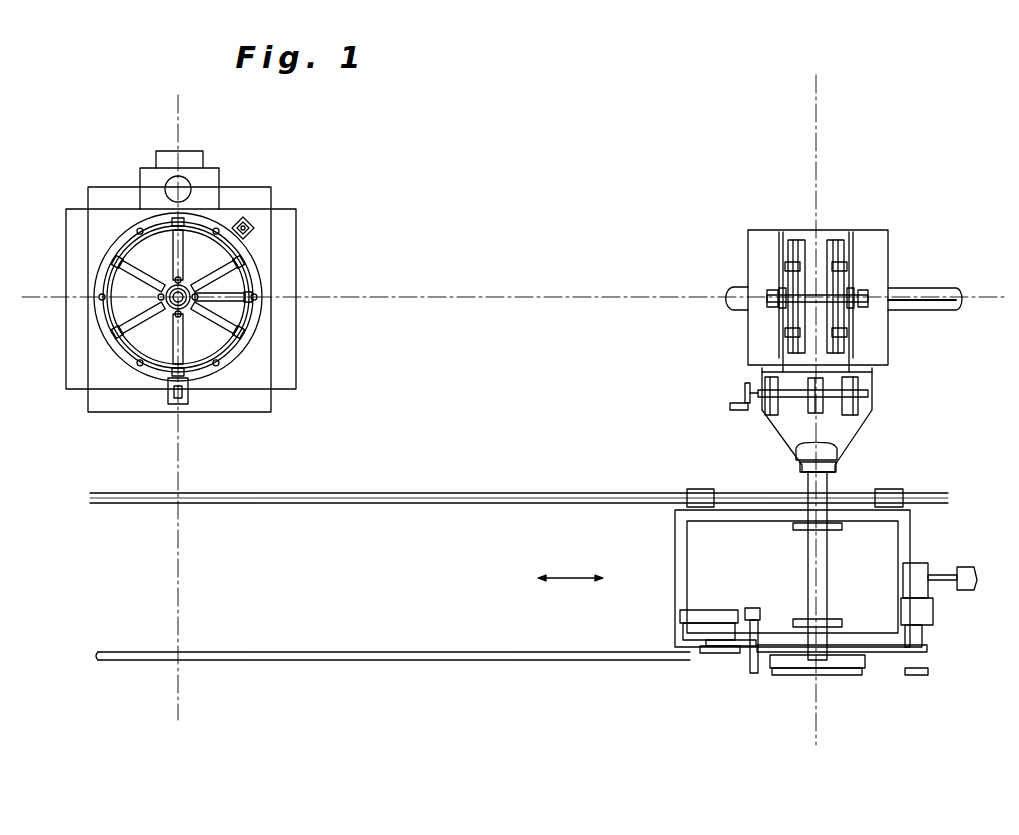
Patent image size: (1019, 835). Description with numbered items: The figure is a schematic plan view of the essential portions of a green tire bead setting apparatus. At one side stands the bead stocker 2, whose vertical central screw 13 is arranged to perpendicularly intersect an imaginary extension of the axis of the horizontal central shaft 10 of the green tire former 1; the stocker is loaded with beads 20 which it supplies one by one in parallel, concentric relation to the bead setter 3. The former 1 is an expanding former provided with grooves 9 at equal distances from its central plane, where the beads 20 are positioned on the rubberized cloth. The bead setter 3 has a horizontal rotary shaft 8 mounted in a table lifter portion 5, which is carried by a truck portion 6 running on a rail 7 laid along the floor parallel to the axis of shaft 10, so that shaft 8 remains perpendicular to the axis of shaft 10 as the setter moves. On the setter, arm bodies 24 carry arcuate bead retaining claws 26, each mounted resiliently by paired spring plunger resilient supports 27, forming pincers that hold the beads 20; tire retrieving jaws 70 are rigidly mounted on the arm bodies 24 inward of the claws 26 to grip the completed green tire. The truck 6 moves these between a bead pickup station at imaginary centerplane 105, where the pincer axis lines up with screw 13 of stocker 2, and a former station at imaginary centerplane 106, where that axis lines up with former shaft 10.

The green tire former 1 is at (756, 230).
The bead stocker 2 is at (271, 326).
The bead setter 3 is at (775, 435).
The table lifter portion 5 is at (687, 565).
The truck portion 6 is at (682, 613).
The rail 7 is at (482, 661).
The rotary shaft 8 is at (828, 561).
The grooves 9 is at (762, 370).
The central shaft 10 is at (930, 288).
The central screw 13 is at (175, 310).
The beads 20 is at (205, 330).
The arm body 24 is at (780, 232).
The bead retaining claws 26 is at (783, 347).
The resilient supports 27 is at (843, 268).
The tire retrieving jaws 70 is at (800, 236).
The imaginary centerplane of bead pickup station 105 is at (180, 704).
The imaginary centerplane of former station 106 is at (818, 724).